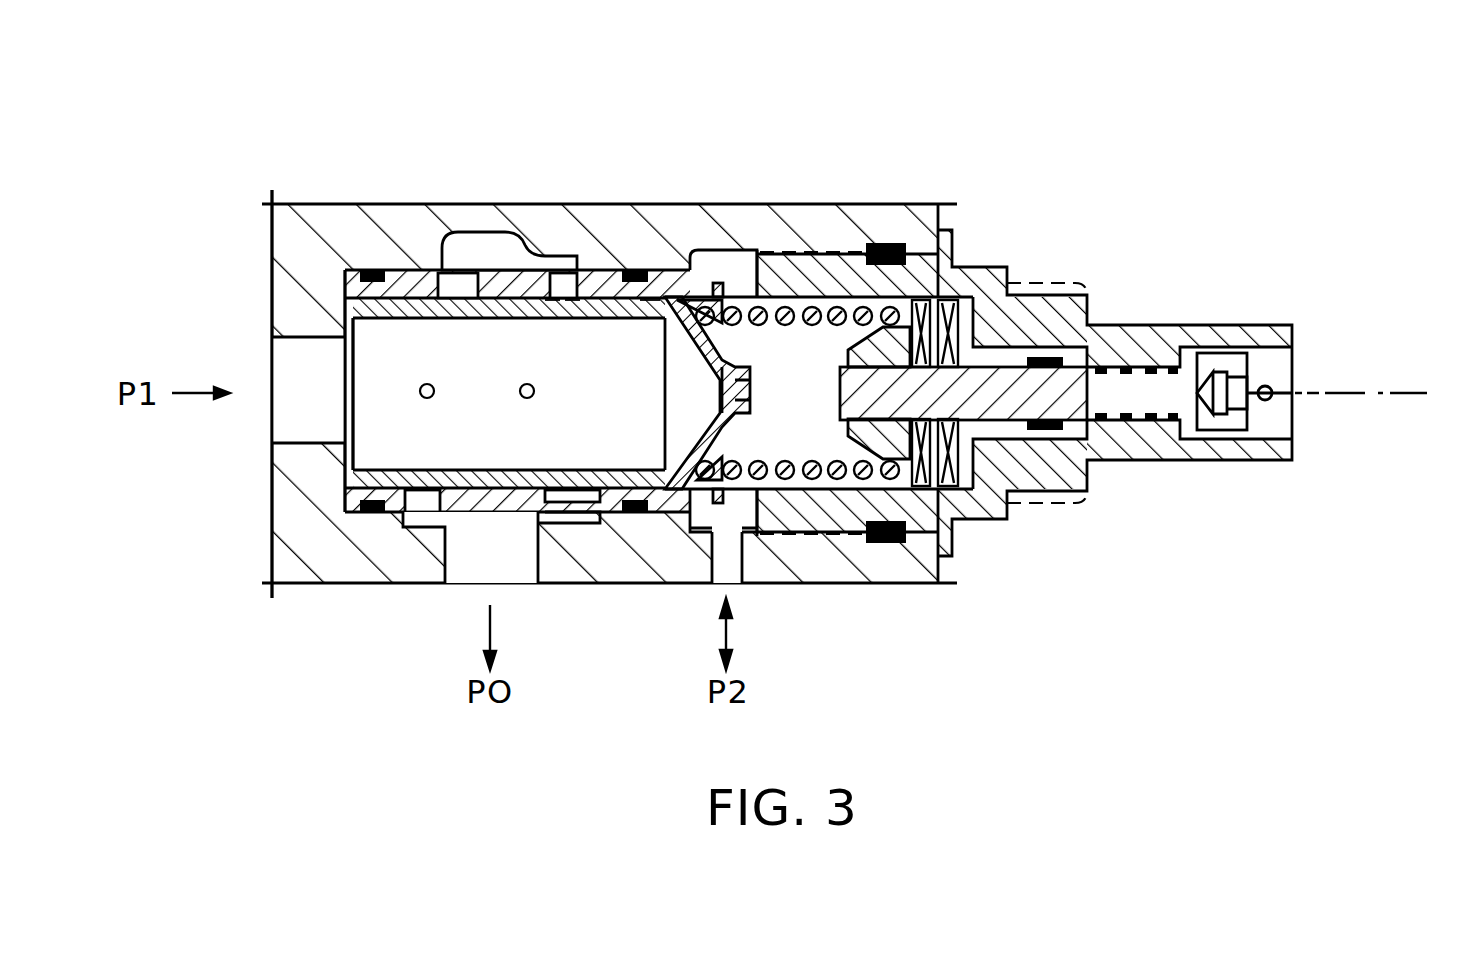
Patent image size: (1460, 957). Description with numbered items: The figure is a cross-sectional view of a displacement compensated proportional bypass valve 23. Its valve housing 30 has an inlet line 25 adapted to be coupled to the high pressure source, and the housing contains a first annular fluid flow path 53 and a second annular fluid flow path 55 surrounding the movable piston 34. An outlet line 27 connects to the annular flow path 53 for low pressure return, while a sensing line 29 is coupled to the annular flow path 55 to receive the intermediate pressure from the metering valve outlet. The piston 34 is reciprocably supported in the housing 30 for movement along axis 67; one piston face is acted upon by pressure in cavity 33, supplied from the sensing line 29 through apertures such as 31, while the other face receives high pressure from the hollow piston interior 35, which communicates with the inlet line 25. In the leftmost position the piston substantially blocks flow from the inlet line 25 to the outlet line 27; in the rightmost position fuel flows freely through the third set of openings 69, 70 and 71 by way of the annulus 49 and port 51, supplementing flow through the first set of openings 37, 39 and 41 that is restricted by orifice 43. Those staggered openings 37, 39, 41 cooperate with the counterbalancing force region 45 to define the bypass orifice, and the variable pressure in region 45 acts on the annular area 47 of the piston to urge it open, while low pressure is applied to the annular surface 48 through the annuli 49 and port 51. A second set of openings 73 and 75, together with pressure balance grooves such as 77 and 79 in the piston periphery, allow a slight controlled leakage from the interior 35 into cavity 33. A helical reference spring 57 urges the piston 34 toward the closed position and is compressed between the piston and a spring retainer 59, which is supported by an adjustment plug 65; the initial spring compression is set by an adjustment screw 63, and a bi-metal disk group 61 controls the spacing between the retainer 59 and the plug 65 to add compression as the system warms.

The bypass valve 23 is at (1117, 198).
The inlet line 25 is at (332, 330).
The outlet line 27 is at (442, 565).
The sensing line 29 is at (744, 560).
The valve housing 30 is at (988, 292).
The aperture 31 is at (736, 497).
The cavity 33 is at (815, 368).
The movable piston 34 is at (345, 478).
The hollow piston interior 35 is at (660, 406).
The sidewall opening 37 is at (426, 318).
The sidewall opening 39 is at (427, 383).
The sidewall opening 41 is at (430, 472).
The orifice 43 is at (445, 527).
The counterbalancing force region 45 is at (445, 268).
The annular area 47 is at (448, 282).
The annular surface 48 is at (550, 312).
The annulus 49 is at (568, 322).
The port 51 is at (557, 513).
The first annular fluid flow path 53 is at (500, 240).
The second annular fluid flow path 55 is at (728, 250).
The helical reference spring 57 is at (832, 305).
The spring retainer 59 is at (860, 437).
The bi-metal disk group 61 is at (948, 445).
The adjustment screw 63 is at (1218, 358).
The adjustment plug 65 is at (1013, 403).
The axis 67 is at (1363, 390).
The sidewall opening 69 is at (527, 315).
The sidewall opening 70 is at (523, 383).
The sidewall opening 71 is at (520, 478).
The sidewall opening 73 is at (655, 313).
The sidewall opening 75 is at (655, 470).
The pressure balance groove 77 is at (522, 505).
The pressure balance groove 79 is at (642, 297).